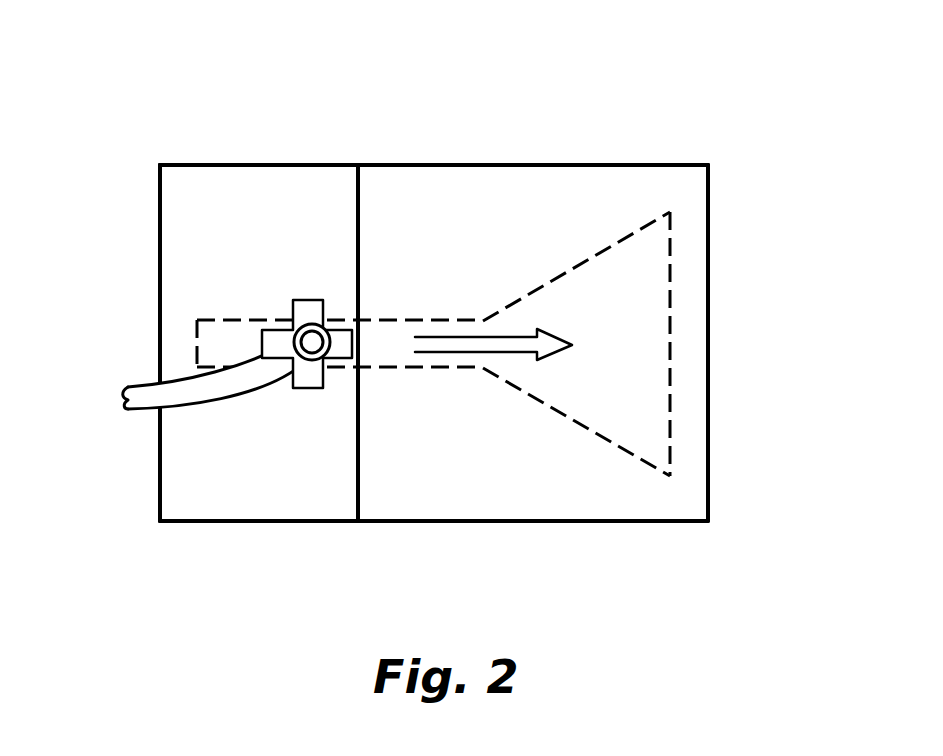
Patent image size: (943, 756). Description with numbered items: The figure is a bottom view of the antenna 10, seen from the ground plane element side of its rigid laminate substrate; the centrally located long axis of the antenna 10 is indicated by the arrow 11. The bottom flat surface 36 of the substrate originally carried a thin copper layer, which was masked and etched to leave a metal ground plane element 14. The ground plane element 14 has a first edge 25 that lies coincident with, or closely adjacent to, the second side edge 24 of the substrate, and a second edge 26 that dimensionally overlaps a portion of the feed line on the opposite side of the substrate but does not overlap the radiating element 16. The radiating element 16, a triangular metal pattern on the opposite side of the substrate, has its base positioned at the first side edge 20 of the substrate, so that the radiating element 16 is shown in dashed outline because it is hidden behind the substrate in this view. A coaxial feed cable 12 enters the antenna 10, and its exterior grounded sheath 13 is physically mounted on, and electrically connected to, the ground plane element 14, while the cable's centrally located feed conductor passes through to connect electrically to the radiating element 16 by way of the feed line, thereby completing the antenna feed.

The antenna 10 is at (742, 136).
The arrow 11 is at (515, 337).
The coaxial feed cable 12 is at (148, 403).
The grounded sheath 13 is at (299, 330).
The ground plane element 14 is at (187, 215).
The radiating element 16 is at (662, 336).
The first side edge 20 is at (708, 243).
The second side edge 24 is at (158, 178).
The first edge 25 is at (160, 310).
The second edge 26 is at (362, 212).
The bottom flat surface 36 is at (455, 487).